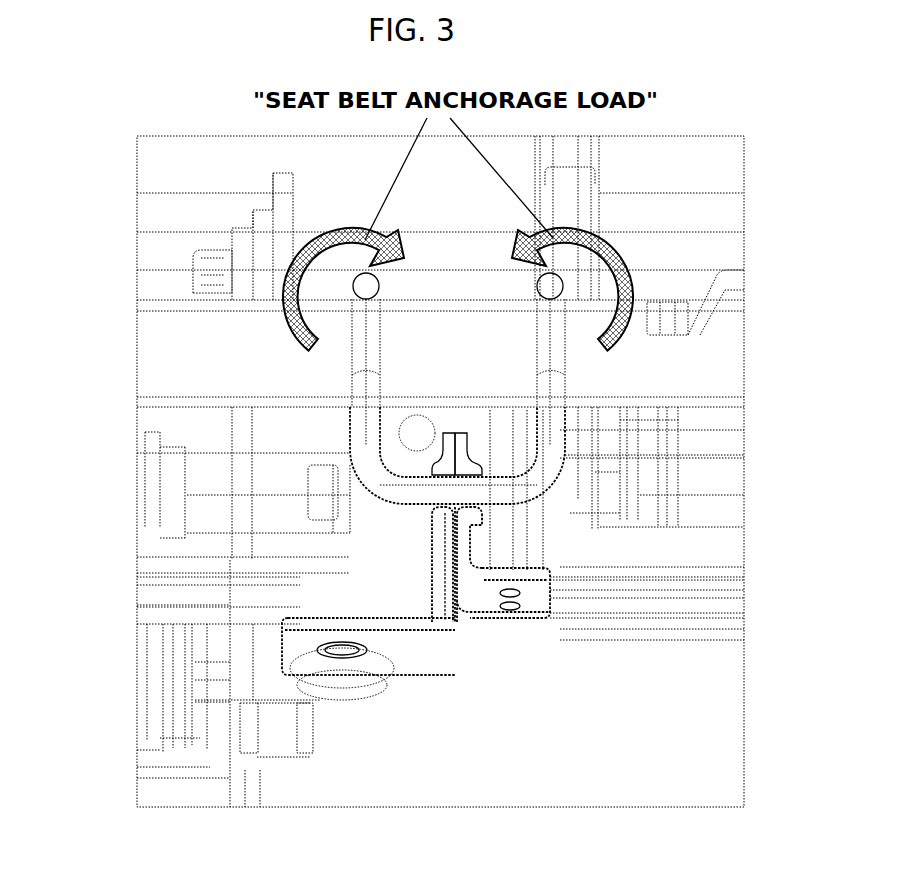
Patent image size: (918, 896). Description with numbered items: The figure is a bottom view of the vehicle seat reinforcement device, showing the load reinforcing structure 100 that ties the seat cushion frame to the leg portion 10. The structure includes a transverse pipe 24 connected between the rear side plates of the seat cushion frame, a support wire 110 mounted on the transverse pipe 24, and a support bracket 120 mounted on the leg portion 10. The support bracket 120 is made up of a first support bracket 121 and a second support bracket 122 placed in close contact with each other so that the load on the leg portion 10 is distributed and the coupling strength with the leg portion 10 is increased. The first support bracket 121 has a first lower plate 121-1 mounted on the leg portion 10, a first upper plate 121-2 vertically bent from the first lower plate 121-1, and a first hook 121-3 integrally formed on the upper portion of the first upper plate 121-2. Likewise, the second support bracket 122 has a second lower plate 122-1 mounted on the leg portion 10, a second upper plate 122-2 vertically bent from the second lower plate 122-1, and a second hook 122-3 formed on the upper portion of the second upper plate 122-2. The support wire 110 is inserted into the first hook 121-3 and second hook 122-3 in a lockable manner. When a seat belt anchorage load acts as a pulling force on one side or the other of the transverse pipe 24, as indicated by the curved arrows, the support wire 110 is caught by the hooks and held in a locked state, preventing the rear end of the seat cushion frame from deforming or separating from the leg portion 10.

The leg portion 10 is at (653, 587).
The transverse pipe 24 is at (178, 305).
The load reinforcing structure 100 is at (72, 415).
The support wire 110 is at (335, 430).
The support bracket 120 is at (355, 585).
The first support bracket 121 is at (580, 590).
The first lower plate 121-1 is at (524, 651).
The first upper plate 121-2 is at (462, 537).
The first hook 121-3 is at (460, 452).
The second support bracket 122 is at (380, 661).
The second lower plate 122-1 is at (355, 733).
The second upper plate 122-2 is at (452, 573).
The second hook 122-3 is at (453, 455).